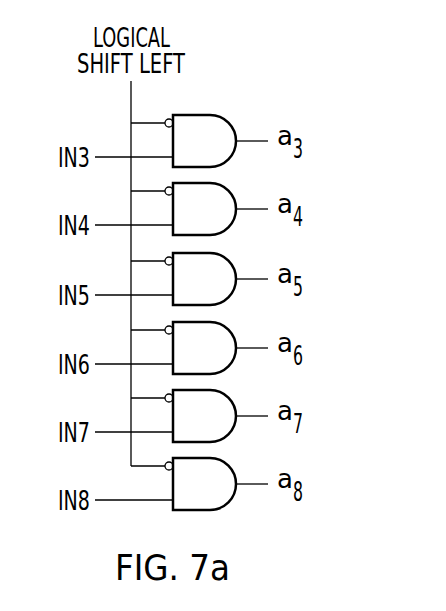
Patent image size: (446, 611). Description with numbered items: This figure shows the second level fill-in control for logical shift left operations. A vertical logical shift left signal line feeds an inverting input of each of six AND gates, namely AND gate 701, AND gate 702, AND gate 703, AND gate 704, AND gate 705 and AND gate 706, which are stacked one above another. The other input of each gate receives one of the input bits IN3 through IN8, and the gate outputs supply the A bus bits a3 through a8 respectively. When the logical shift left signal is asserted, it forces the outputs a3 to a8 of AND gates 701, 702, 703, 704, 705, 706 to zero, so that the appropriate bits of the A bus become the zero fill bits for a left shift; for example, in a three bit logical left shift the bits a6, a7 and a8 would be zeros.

The AND gate 701 is at (228, 122).
The AND gate 702 is at (228, 190).
The AND gate 703 is at (228, 260).
The AND gate 704 is at (228, 329).
The AND gate 705 is at (228, 397).
The AND gate 706 is at (228, 465).